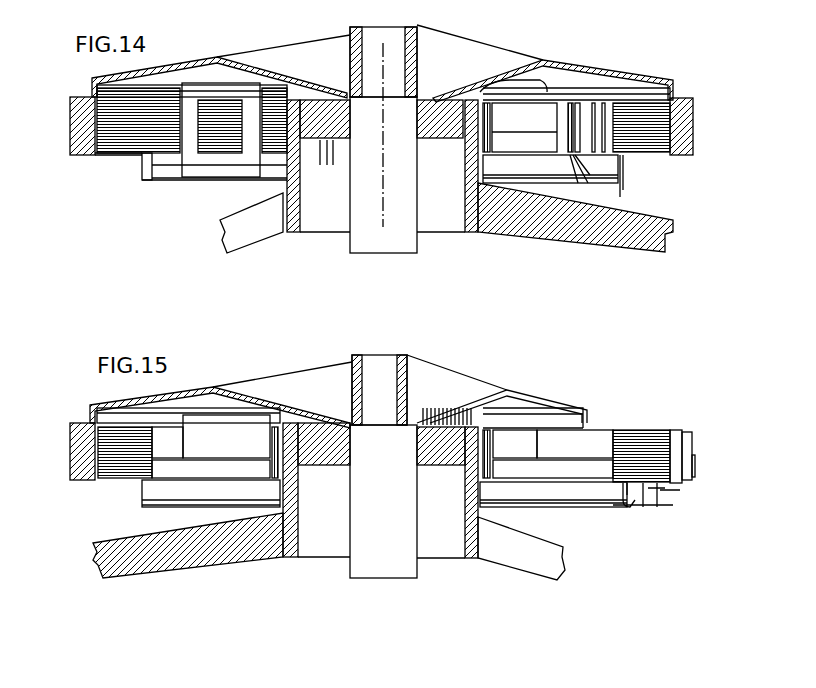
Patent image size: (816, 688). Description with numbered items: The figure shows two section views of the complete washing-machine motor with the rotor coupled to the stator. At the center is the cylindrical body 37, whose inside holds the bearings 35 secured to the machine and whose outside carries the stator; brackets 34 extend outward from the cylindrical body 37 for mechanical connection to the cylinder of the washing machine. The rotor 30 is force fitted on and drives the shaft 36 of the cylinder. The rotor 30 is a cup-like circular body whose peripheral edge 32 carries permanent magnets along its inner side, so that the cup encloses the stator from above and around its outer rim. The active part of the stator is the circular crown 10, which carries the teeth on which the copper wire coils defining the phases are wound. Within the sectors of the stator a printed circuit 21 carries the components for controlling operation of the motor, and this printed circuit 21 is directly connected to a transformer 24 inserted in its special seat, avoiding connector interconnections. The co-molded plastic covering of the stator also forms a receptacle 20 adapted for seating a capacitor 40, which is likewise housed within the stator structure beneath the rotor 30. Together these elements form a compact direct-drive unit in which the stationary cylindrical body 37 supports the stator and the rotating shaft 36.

In FIG. 14, the circular crown 10 is at (127, 143).
In FIG. 15, the receptacle 20 is at (213, 417).
In FIG. 14, the printed circuit 21 is at (560, 180).
In FIG. 15, the printed circuit 21 is at (148, 507).
In FIG. 14, the transformer 24 is at (212, 160).
In FIG. 14, the rotor 30 is at (450, 58).
In FIG. 15, the rotor 30 is at (423, 378).
In FIG. 14, the peripheral edge 32 is at (88, 153).
In FIG. 15, the peripheral edge 32 is at (78, 422).
In FIG. 14, the brackets 34 is at (513, 223).
In FIG. 15, the brackets 34 is at (232, 548).
In FIG. 14, the bearings 35 is at (323, 98).
In FIG. 15, the bearings 35 is at (313, 423).
In FIG. 14, the shaft 36 is at (360, 195).
In FIG. 15, the shaft 36 is at (408, 573).
In FIG. 14, the cylindrical body 37 is at (465, 190).
In FIG. 15, the cylindrical body 37 is at (468, 500).
In FIG. 15, the capacitor 40 is at (210, 450).